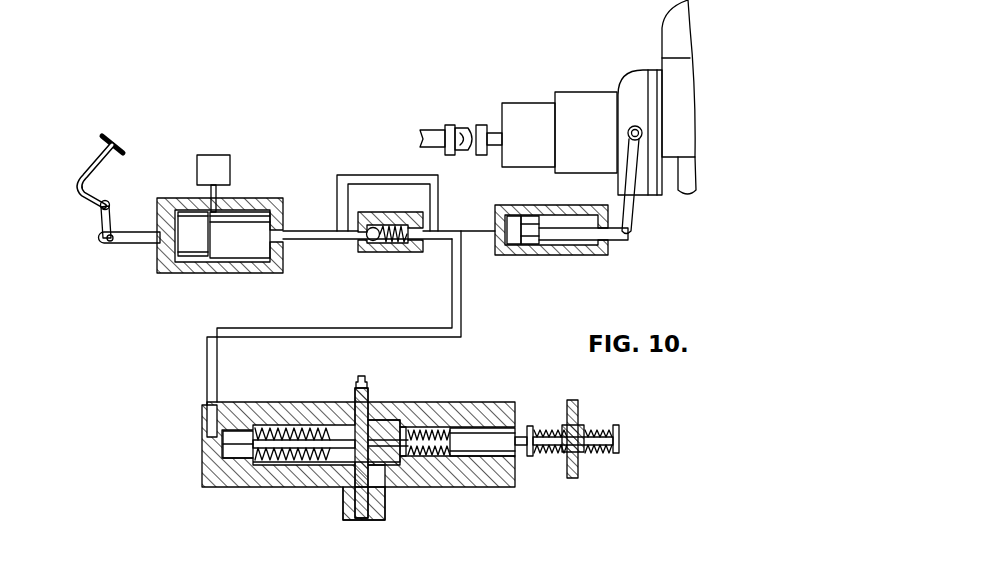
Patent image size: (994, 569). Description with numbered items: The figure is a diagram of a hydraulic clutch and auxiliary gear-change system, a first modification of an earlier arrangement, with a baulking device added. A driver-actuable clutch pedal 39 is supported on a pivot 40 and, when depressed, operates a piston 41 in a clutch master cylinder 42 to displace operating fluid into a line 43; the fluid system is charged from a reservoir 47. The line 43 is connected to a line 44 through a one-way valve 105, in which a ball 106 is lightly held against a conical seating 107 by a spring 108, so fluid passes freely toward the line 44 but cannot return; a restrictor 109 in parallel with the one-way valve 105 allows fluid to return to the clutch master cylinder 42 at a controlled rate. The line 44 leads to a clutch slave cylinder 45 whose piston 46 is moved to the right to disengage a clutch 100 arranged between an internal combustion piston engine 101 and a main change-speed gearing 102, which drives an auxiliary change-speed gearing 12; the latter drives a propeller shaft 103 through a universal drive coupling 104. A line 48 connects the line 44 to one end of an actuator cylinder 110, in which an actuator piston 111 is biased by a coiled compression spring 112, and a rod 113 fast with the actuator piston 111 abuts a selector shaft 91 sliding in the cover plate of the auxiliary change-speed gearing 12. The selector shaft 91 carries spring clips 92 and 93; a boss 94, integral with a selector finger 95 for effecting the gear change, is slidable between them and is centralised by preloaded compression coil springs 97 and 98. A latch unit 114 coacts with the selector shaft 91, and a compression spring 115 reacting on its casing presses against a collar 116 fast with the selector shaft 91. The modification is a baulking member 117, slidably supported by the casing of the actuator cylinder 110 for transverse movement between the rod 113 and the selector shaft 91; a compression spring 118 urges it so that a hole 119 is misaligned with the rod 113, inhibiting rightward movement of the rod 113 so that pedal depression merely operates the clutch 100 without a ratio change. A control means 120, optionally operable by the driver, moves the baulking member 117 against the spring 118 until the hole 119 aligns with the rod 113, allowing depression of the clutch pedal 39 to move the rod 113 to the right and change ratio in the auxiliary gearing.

The auxiliary change-speed gearing 12 is at (520, 110).
The clutch pedal 39 is at (120, 146).
The pivot 40 is at (101, 207).
The piston 41 is at (198, 226).
The clutch master cylinder 42 is at (246, 224).
The line 43 is at (300, 231).
The line 44 is at (480, 230).
The clutch slave cylinder 45 is at (513, 226).
The piston 46 is at (530, 226).
The reservoir 47 is at (208, 158).
The line 48 is at (462, 300).
The selector shaft 91 is at (442, 428).
The spring clip 92 is at (530, 428).
The spring clip 93 is at (620, 436).
The boss 94 is at (586, 452).
The selector finger 95 is at (573, 480).
The compression coil spring 97 is at (552, 456).
The compression coil spring 98 is at (594, 430).
The clutch 100 is at (633, 88).
The internal combustion piston engine 101 is at (673, 140).
The main change-speed gearing 102 is at (578, 100).
The propeller shaft 103 is at (437, 136).
The universal drive coupling 104 is at (472, 126).
The one-way valve 105 is at (388, 258).
The ball 106 is at (368, 238).
The conical seating 107 is at (371, 250).
The spring 108 is at (407, 252).
The restrictor 109 is at (384, 176).
The actuator cylinder 110 is at (204, 437).
The actuator piston 111 is at (237, 440).
The coiled compression spring 112 is at (268, 436).
The rod 113 is at (272, 442).
The latch unit 114 is at (492, 446).
The compression spring 115 is at (440, 456).
The collar 116 is at (403, 442).
The baulking member 117 is at (352, 394).
The compression spring 118 is at (349, 498).
The hole 119 is at (370, 422).
The control means 120 is at (361, 376).